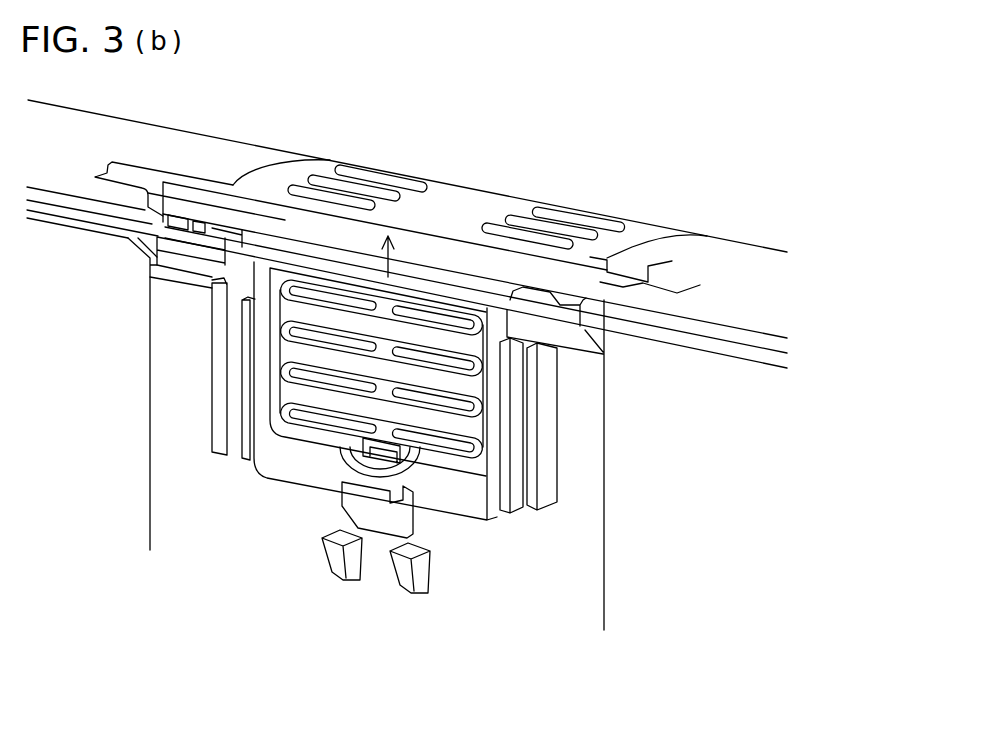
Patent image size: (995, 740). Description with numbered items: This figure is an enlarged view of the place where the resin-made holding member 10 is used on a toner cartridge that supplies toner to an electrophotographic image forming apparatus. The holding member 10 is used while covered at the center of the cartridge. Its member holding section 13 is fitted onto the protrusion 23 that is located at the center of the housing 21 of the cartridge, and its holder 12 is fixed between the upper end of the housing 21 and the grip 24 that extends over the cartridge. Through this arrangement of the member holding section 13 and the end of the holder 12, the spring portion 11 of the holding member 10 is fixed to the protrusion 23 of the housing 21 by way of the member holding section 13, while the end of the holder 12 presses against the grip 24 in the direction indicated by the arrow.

The resin-made holding member 10 is at (249, 498).
The spring portion 11 is at (478, 407).
The holder 12 is at (243, 239).
The member holding section 13 is at (415, 468).
The housing 21 is at (700, 458).
The protrusion 23 is at (380, 457).
The grip 24 is at (447, 210).